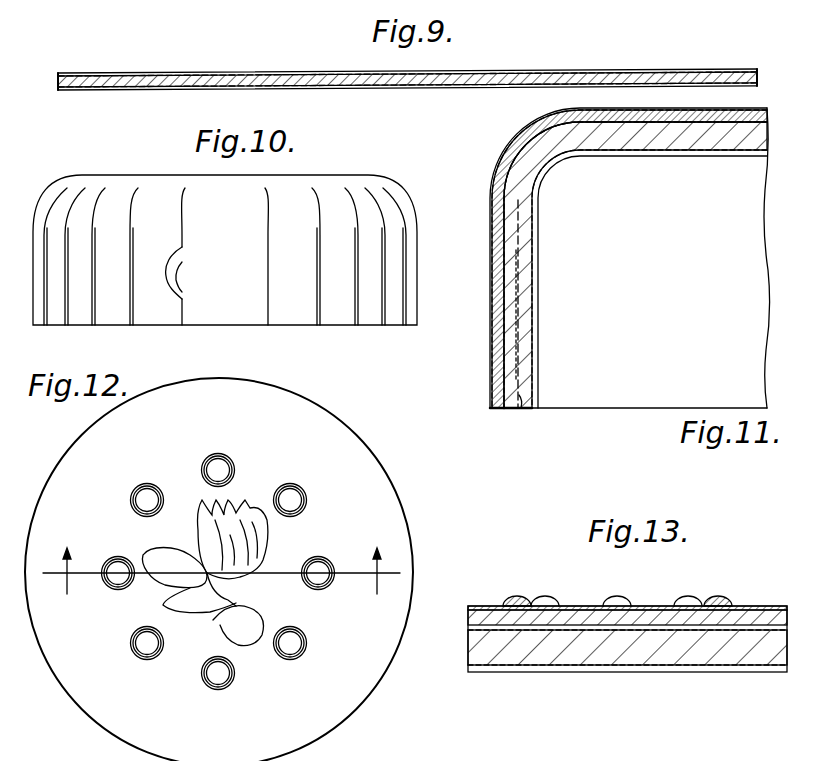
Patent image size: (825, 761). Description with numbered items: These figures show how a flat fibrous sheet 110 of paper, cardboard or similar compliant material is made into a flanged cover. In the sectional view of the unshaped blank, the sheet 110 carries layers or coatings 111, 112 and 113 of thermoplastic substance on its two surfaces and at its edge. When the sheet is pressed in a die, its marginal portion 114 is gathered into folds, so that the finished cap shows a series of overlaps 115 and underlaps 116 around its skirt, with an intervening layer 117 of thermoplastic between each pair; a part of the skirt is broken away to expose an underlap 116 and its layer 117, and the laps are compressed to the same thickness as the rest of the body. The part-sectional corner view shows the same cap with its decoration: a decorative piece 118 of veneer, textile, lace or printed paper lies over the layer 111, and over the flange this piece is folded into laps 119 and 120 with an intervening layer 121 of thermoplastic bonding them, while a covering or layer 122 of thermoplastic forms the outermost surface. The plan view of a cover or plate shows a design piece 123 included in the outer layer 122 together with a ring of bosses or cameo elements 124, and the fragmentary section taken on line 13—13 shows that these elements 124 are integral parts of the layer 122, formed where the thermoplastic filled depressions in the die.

In FIG. 12, the line 13— 13 is at (79, 617).
In FIG. 9, the sheet 110 is at (407, 66).
In FIG. 13, the sheet 110 is at (748, 645).
In FIG. 9, the layer or coating 111 is at (407, 56).
In FIG. 11, the layer or coating 111 is at (575, 118).
In FIG. 13, the layer or coating 111 is at (806, 602).
In FIG. 9, the layer or coating 112 is at (407, 100).
In FIG. 11, the layer or coating 112 is at (670, 179).
In FIG. 13, the layer or coating 112 is at (663, 702).
In FIG. 9, the layer or coating 113 is at (404, 63).
In FIG. 9, the marginal portion 114 is at (407, 62).
In FIG. 10, the overlap 115 is at (177, 304).
In FIG. 11, the overlap 115 is at (513, 410).
In FIG. 10, the underlap 116 is at (221, 265).
In FIG. 11, the underlap 116 is at (567, 436).
In FIG. 10, the intervening layer 117 is at (243, 288).
In FIG. 11, the intervening layer 117 is at (589, 369).
In FIG. 11, the decorative piece 118 is at (684, 107).
In FIG. 13, the decorative piece 118 is at (769, 593).
In FIG. 11, the lap 119 is at (493, 402).
In FIG. 11, the lap 120 is at (502, 411).
In FIG. 11, the intervening layer 121 is at (494, 409).
In FIG. 11, the covering or layer 122 is at (498, 178).
In FIG. 13, the covering or layer 122 is at (671, 592).
In FIG. 12, the design piece 123 is at (320, 548).
In FIG. 12, the bosses or cameo elements 124 is at (320, 581).
In FIG. 13, the bosses or cameo elements 124 is at (517, 598).